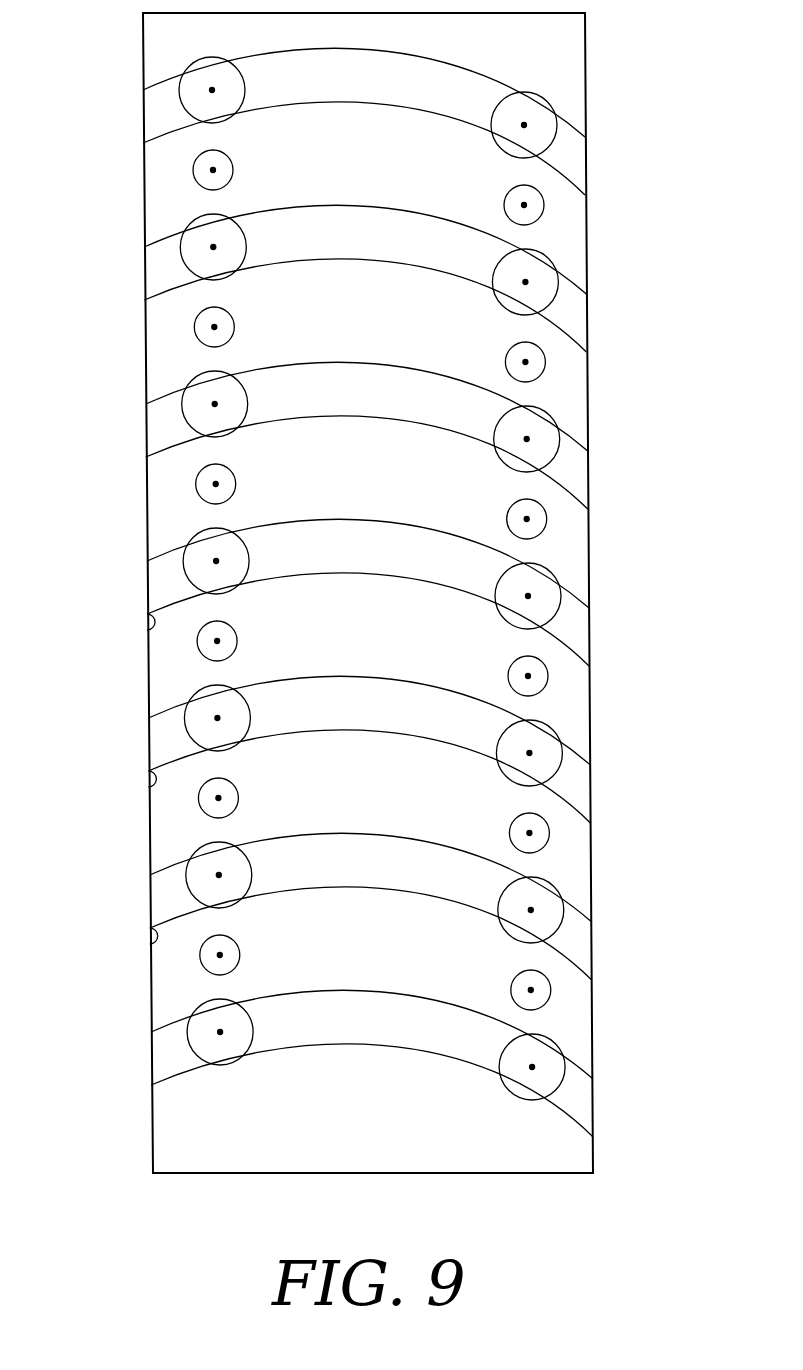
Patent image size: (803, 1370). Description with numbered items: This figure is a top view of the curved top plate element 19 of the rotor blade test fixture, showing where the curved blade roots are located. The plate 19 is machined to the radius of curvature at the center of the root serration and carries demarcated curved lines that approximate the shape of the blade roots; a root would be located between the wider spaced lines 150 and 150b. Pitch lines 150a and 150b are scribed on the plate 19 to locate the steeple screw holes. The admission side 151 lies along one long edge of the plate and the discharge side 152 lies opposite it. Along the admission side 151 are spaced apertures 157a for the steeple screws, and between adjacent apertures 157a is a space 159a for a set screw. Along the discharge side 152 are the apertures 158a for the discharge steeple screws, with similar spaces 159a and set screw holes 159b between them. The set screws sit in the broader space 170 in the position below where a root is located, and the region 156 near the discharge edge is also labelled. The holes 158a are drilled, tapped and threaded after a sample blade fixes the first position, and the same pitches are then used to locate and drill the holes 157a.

The top plate element 19 is at (153, 485).
The curved line 150 is at (306, 592).
The pitch line 150a is at (150, 719).
The pitch line 150b is at (147, 629).
The admission side 151 is at (115, 344).
The discharge side 152 is at (629, 342).
The strip end portion 156 is at (581, 308).
The aperture 157a is at (190, 66).
The aperture 158a is at (548, 102).
The space 159a is at (228, 155).
The second small aperture 159b is at (510, 191).
The broader space 170 is at (583, 583).